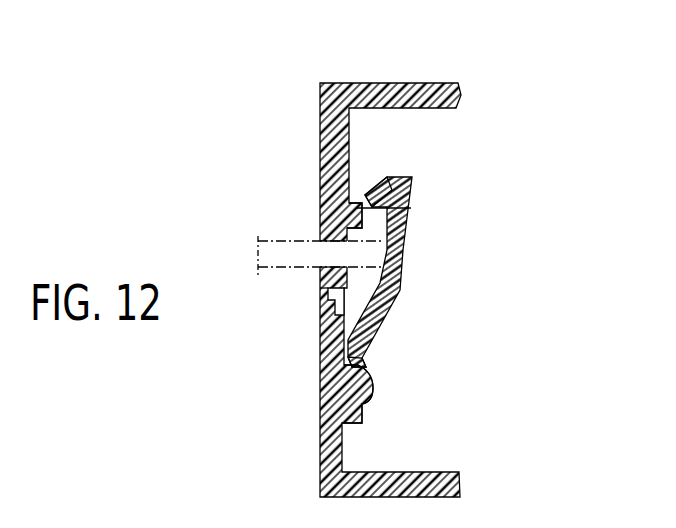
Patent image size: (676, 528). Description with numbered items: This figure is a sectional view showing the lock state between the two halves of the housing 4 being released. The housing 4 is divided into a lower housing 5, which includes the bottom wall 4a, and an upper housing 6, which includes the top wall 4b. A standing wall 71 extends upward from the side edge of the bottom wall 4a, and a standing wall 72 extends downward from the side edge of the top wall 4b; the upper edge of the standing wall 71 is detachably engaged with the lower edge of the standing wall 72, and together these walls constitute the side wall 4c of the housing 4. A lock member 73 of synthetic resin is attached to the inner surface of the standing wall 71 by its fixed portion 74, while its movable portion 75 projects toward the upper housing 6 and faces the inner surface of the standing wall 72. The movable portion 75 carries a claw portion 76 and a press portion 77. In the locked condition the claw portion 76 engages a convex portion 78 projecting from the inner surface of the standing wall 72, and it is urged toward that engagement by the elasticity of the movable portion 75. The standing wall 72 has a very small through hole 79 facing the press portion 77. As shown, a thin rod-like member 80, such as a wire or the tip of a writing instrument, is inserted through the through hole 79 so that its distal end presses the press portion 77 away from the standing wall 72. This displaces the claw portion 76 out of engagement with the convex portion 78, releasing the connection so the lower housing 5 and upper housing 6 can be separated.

The housing 4 is at (242, 285).
The bottom wall 4a is at (424, 472).
The top wall 4b is at (447, 100).
The side wall 4c is at (321, 162).
The lower housing 5 is at (340, 351).
The upper housing 6 is at (335, 286).
The standing wall 71 is at (333, 432).
The standing wall 72 is at (321, 124).
The lock member 73 is at (493, 295).
The fixed portion 74 is at (362, 360).
The movable portion 75 is at (400, 290).
The claw portion 76 is at (372, 192).
The press portion 77 is at (400, 241).
The convex portion 78 is at (405, 208).
The through hole 79 is at (350, 240).
The rod-like member 80 is at (273, 254).